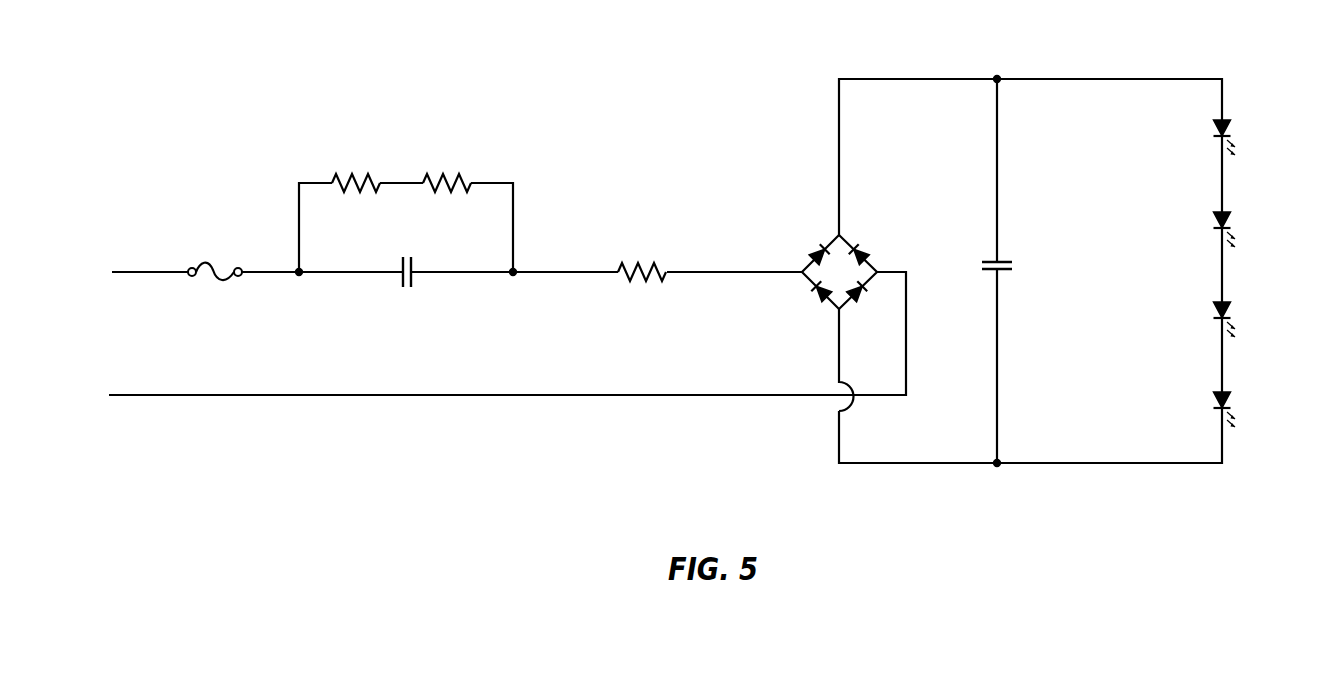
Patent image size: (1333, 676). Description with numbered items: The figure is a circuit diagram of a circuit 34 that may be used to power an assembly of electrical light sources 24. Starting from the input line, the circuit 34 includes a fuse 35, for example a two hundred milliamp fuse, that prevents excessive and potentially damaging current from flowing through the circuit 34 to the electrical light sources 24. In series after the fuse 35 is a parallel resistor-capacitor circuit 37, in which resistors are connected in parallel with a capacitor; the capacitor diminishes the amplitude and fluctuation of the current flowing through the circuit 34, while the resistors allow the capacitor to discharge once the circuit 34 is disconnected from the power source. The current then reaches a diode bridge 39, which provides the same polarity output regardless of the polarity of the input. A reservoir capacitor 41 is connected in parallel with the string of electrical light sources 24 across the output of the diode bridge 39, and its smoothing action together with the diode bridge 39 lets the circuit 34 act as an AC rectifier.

The electrical light sources 24 is at (1232, 130).
The circuit 34 is at (406, 180).
The fuse 35 is at (215, 282).
The parallel resistor-capacitor (RC) circuit 37 is at (412, 290).
The diode bridge 39 is at (818, 254).
The reservoir capacitor 41 is at (1012, 260).